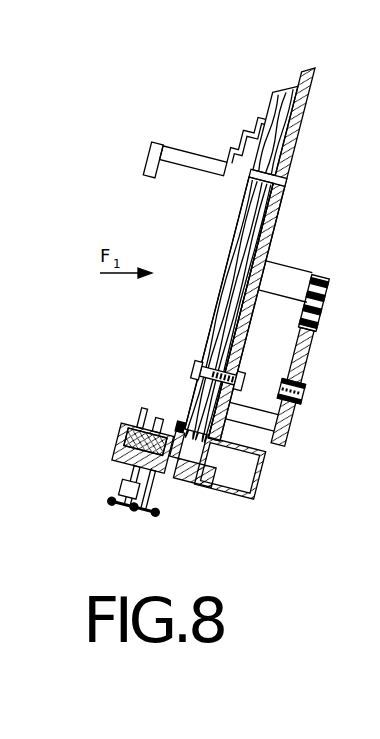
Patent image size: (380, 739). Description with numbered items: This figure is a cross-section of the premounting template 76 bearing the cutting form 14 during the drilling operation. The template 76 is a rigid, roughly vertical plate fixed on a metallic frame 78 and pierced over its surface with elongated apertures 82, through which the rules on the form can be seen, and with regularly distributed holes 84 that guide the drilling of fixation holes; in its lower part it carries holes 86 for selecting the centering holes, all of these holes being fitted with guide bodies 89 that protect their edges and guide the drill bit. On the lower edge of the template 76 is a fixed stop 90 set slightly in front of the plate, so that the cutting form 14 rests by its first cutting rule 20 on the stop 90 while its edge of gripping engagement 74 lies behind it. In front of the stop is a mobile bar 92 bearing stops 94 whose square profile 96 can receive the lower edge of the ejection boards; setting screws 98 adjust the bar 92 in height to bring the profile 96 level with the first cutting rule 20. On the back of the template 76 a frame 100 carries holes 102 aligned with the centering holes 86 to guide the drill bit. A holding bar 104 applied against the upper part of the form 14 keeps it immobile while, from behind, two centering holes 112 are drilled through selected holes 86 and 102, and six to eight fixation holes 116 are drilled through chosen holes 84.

The cutting form 14 is at (262, 203).
The first cutting rule 20 is at (180, 427).
The edge of gripping engagement 74 is at (197, 495).
The premounting template 76 is at (270, 213).
The metallic frame 78 is at (262, 480).
The apertures 82 is at (292, 132).
The holes 84 is at (285, 187).
The holes 86 is at (235, 383).
The guide bodies 89 is at (210, 330).
The fixed stop 90 is at (173, 470).
The mobile bar 92 is at (123, 448).
The stops 94 is at (137, 427).
The square profile 96 is at (163, 412).
The setting screws 98 is at (125, 507).
The frame 100 is at (322, 278).
The holes 102 is at (305, 397).
The holding bar 104 is at (180, 158).
The holes 112 is at (198, 372).
The fixation holes 116 is at (252, 175).